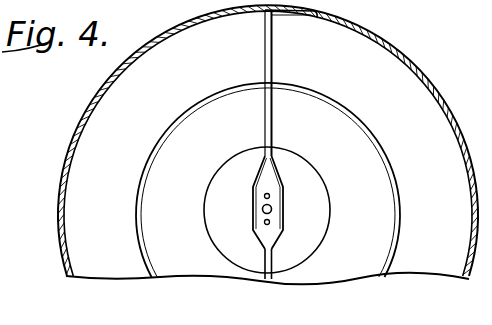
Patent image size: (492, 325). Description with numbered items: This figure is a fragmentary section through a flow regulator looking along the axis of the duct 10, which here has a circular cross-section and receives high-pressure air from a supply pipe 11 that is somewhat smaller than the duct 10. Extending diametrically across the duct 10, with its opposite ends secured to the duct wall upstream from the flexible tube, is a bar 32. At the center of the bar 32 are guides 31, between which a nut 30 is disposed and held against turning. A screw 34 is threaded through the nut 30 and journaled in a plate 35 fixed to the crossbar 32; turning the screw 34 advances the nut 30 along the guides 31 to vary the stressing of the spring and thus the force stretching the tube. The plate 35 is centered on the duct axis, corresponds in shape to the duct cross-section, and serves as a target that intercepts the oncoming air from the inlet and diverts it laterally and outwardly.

The duct 10 is at (84, 103).
The supply pipe 11 is at (340, 111).
The nut 30 is at (276, 197).
The guides 31 is at (281, 181).
The bar 32 is at (264, 118).
The screw 34 is at (262, 209).
The plate 35 is at (330, 234).